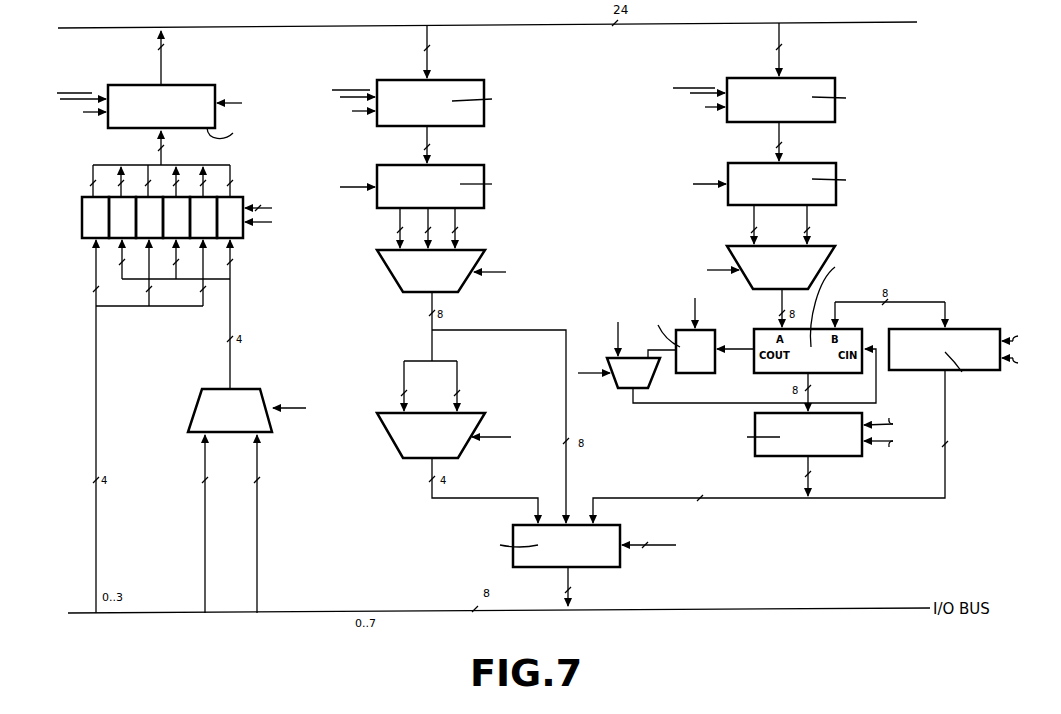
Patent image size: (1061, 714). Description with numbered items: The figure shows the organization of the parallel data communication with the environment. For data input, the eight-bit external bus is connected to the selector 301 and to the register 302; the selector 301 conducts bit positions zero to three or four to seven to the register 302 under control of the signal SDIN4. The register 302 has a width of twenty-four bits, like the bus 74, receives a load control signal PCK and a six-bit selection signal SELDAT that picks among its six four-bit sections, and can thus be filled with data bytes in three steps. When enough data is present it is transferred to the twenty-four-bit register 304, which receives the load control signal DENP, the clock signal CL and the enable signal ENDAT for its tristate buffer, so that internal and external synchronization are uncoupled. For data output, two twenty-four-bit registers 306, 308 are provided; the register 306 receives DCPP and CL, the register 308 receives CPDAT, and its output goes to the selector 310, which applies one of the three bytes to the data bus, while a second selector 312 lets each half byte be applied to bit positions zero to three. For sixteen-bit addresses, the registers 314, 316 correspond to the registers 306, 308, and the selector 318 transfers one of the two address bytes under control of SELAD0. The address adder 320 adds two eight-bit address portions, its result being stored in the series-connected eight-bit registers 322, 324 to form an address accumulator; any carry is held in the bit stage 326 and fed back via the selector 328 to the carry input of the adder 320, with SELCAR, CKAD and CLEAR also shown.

The bus 74 is at (532, 8).
The selector 301 is at (251, 389).
The register 302 is at (82, 219).
The register 304 is at (190, 84).
The register 306 is at (465, 80).
The register 308 is at (465, 165).
The selector 310 is at (477, 250).
The second selector 312 is at (477, 413).
The register 314 is at (811, 78).
The register 316 is at (815, 163).
The selector 318 is at (825, 250).
The address adder 320 is at (603, 568).
The eight-bit register 322 is at (791, 458).
The eight-bit register 324 is at (951, 329).
The bit stage 326 is at (702, 330).
The selector 328 is at (611, 389).